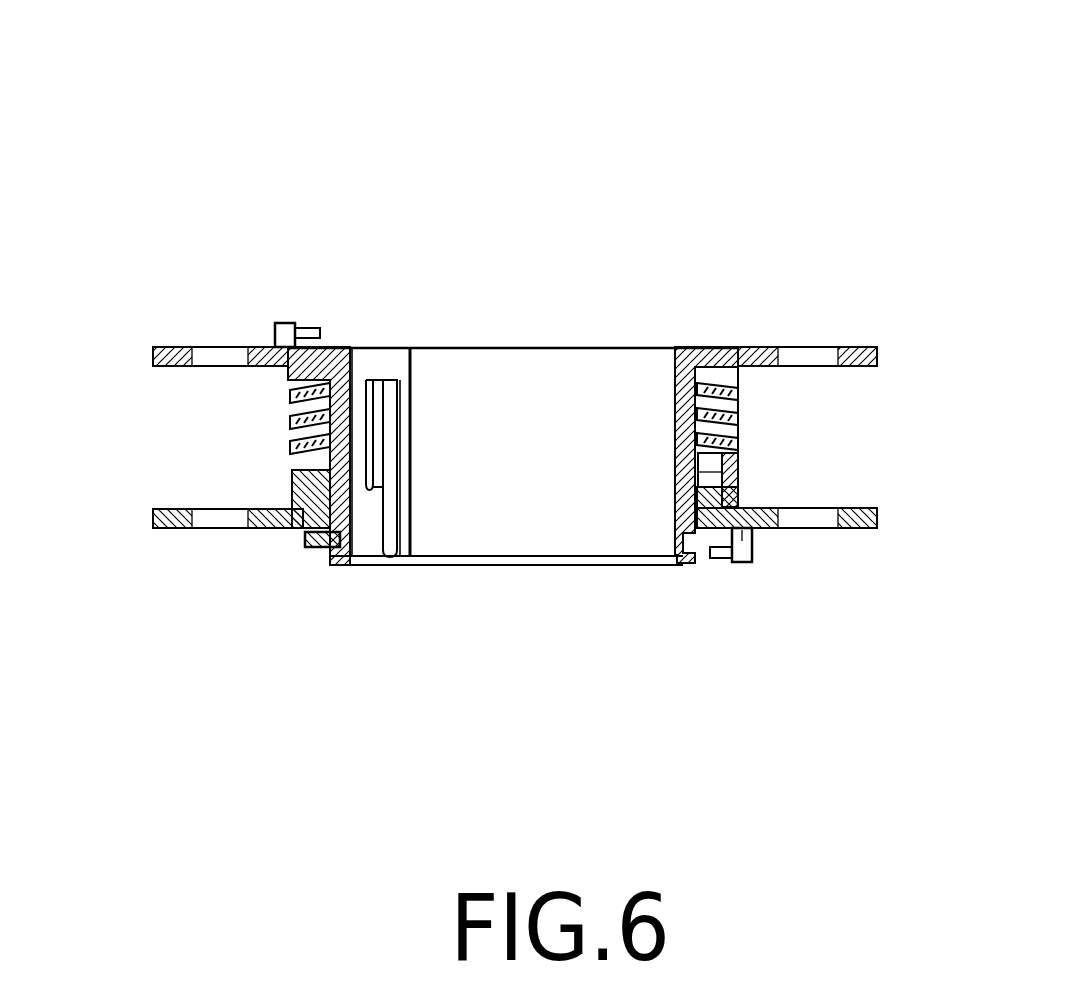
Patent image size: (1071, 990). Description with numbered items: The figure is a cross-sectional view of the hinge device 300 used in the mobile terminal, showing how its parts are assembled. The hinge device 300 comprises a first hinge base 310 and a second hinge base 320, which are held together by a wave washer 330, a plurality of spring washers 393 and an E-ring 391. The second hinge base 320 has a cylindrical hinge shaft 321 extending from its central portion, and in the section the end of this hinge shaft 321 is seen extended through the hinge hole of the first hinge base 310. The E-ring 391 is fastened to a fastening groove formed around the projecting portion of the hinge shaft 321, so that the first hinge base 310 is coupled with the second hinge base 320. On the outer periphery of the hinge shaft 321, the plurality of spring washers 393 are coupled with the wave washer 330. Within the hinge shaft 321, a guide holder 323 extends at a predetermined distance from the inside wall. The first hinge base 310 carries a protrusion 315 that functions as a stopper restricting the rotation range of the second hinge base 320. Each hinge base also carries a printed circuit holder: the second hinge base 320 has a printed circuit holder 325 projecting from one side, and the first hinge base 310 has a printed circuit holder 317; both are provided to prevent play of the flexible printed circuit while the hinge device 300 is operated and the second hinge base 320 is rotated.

The hinge device 300 is at (100, 88).
The first hinge base 310 is at (300, 528).
The protrusion 315 is at (738, 465).
The printed circuit holder 317 is at (750, 543).
The second hinge base 320 is at (700, 348).
The hinge shaft 321 is at (451, 383).
The guide holder 323 is at (397, 510).
The printed circuit holder 325 is at (285, 336).
The wave washer 330 is at (292, 462).
The E-ring 391 is at (327, 548).
The spring washers 393 is at (752, 390).